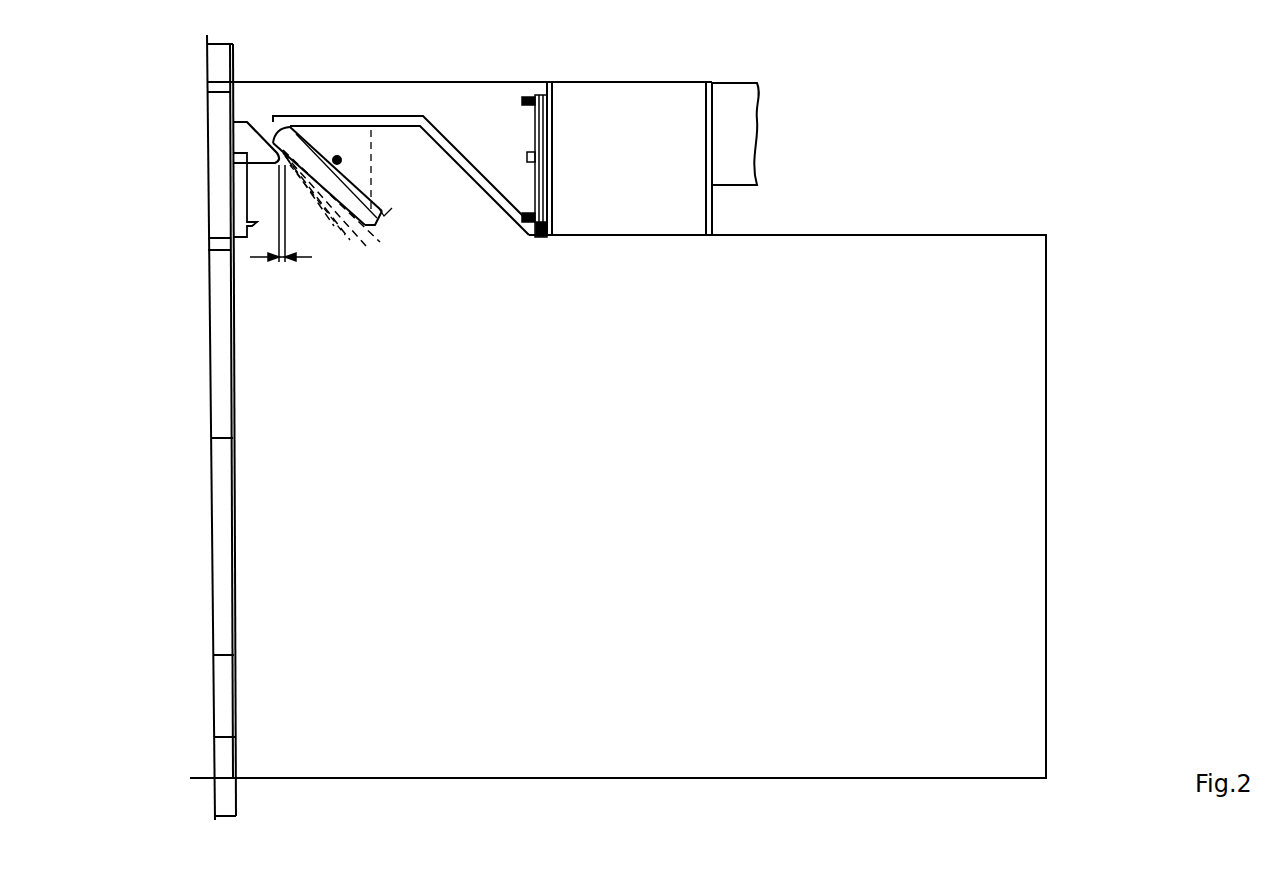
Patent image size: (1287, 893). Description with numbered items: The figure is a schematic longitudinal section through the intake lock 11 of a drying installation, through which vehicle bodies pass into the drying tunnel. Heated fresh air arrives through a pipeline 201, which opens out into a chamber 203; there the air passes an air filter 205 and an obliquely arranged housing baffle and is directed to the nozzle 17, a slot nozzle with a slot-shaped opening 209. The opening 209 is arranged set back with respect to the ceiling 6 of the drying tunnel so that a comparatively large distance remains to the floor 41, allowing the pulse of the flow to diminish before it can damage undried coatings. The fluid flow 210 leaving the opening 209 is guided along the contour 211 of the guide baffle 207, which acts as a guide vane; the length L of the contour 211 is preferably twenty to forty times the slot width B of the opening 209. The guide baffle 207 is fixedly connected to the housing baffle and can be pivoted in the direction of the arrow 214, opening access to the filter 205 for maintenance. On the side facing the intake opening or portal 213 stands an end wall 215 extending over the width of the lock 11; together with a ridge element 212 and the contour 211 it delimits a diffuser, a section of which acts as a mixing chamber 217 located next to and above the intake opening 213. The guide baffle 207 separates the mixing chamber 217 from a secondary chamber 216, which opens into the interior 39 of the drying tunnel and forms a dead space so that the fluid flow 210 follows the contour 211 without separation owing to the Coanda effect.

The ceiling 6 is at (788, 236).
The intake lock 11 is at (1116, 130).
The nozzle 17 is at (257, 100).
The interior 39 is at (462, 655).
The floor 41 is at (545, 777).
The pipeline 201 is at (743, 130).
The chamber 203 is at (583, 72).
The air filter 205 is at (547, 135).
The guide baffle 207 is at (423, 116).
The slot-shaped opening 209 is at (268, 160).
The fluid flow 210 is at (384, 248).
The contour 211 is at (345, 244).
The ridge element 212 is at (240, 135).
The intake opening 213 is at (196, 490).
The arrow 214 is at (545, 252).
The end wall 215 is at (246, 222).
The secondary chamber 216 is at (400, 178).
The mixing chamber 217 is at (306, 222).
The slot width B is at (281, 229).
The length L is at (389, 177).